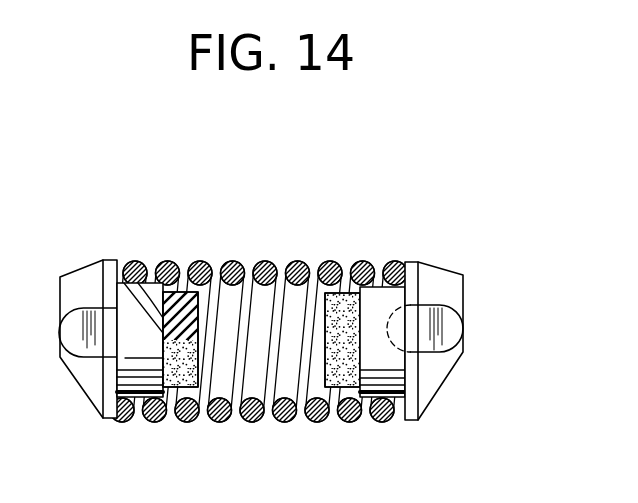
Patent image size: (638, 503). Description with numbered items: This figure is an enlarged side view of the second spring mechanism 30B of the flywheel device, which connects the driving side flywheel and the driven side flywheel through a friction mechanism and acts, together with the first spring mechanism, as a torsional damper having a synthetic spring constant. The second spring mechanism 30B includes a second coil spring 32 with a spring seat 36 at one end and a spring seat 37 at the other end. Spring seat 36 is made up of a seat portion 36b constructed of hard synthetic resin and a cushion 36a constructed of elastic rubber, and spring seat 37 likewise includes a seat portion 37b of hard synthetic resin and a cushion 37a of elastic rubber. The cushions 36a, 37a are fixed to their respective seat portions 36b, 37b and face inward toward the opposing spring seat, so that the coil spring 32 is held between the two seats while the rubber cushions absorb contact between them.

The second spring mechanism 30B is at (85, 179).
The second coil spring 32 is at (333, 262).
The spring seat 36 is at (92, 390).
The cushion 36a is at (177, 390).
The seat portion 36b is at (105, 418).
The spring seat 37 is at (456, 272).
The cushion 37a is at (330, 390).
The seat portion 37b is at (413, 262).